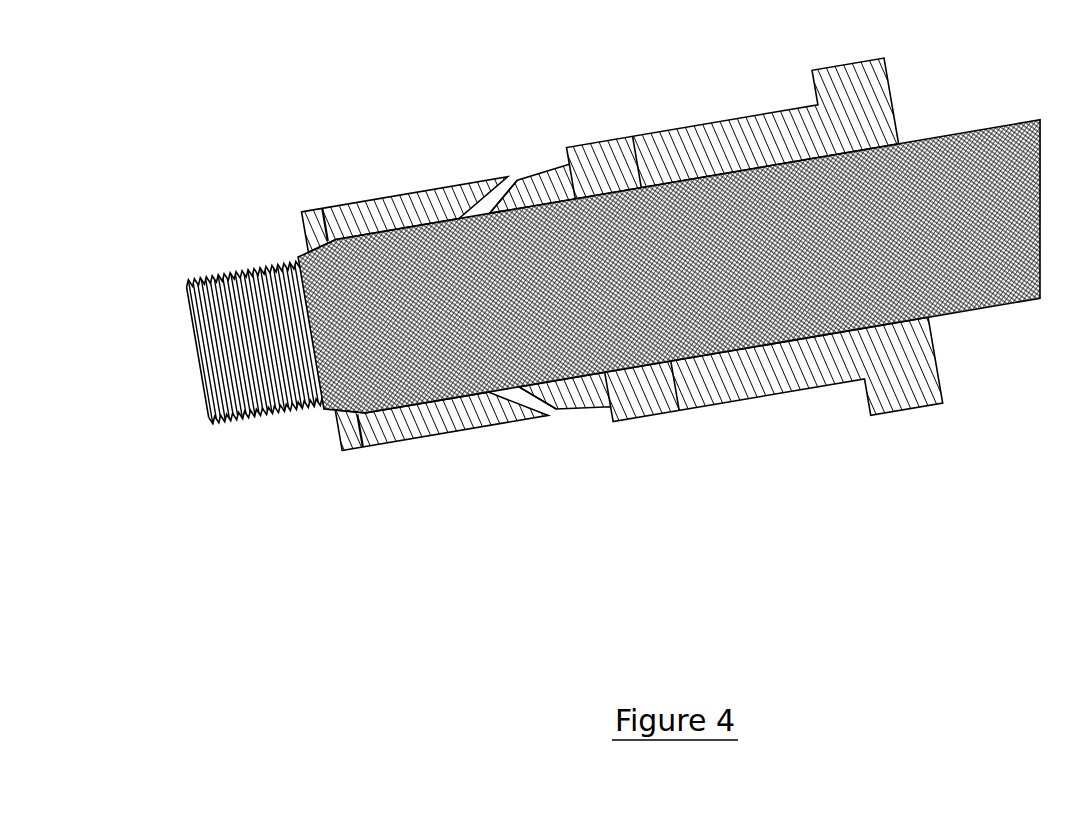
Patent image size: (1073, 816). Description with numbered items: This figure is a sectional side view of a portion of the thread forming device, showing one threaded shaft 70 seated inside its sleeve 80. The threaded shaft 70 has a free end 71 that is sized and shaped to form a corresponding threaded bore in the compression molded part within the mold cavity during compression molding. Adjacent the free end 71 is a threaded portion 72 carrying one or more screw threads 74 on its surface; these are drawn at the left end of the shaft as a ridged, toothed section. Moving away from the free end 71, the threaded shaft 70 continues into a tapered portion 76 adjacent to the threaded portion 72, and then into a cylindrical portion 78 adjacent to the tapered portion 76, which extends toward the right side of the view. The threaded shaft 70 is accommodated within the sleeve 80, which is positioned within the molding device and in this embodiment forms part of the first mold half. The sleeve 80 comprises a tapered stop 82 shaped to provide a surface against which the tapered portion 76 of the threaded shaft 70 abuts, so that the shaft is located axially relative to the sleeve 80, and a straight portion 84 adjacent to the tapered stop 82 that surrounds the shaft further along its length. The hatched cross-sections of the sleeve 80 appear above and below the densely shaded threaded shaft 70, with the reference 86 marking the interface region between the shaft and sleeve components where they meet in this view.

The threaded shaft 70 is at (982, 128).
The free end 71 is at (171, 374).
The threaded portion 72 is at (258, 362).
The screw threads 74 is at (235, 273).
The tapered portion 76 is at (356, 422).
The cylindrical portion 78 is at (444, 460).
The sleeve 80 is at (608, 141).
The tapered stop 82 is at (301, 212).
The straight portion 84 is at (394, 173).
The gap between sleeve and body 86 is at (518, 171).